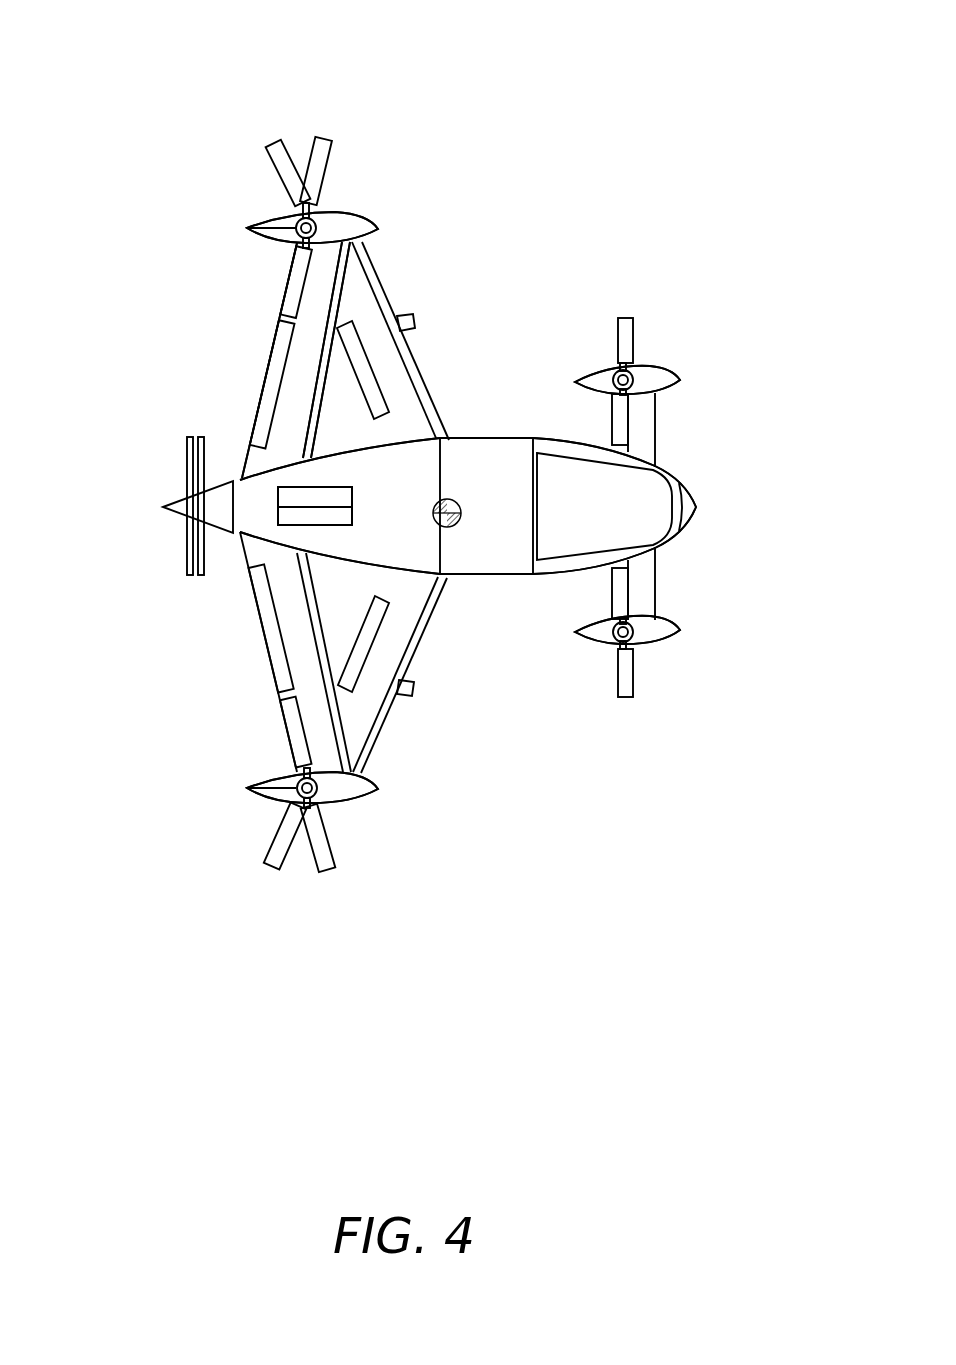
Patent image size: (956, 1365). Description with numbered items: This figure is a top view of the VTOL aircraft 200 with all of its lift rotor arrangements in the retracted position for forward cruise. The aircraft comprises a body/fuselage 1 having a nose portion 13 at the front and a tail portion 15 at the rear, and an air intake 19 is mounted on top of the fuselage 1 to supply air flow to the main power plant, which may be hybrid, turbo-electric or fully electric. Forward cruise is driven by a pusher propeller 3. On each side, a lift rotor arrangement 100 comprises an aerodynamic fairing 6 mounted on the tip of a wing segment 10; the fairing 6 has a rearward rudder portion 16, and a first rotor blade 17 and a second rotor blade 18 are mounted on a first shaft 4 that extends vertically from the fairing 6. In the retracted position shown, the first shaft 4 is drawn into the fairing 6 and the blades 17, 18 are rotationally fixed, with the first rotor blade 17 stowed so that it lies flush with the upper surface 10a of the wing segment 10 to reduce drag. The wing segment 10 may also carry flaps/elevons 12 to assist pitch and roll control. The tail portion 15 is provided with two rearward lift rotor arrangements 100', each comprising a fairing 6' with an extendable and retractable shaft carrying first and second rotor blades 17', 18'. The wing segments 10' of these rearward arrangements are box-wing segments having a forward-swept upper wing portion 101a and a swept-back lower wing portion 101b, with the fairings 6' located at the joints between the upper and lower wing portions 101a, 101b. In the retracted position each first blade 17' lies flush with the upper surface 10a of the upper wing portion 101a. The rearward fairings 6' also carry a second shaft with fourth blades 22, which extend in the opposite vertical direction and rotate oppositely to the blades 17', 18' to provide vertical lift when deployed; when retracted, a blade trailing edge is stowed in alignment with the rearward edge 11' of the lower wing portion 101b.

The body/fuselage 1 is at (485, 450).
The pusher propeller 3 is at (184, 451).
The first shaft 4 is at (617, 372).
The aerodynamic fairing 6 is at (656, 465).
The fairing 6' is at (358, 490).
The wing segment 10 is at (699, 506).
The wing segment 10' is at (391, 360).
The upper surface 10a is at (310, 343).
The rearward edge 11' is at (261, 382).
The flaps/elevons 12 is at (265, 373).
The nose portion 13 is at (658, 472).
The tail portion 15 is at (337, 558).
The rearward rudder portion 16 is at (287, 224).
The first rotor blade 17 is at (582, 506).
The first rotor blade 17' is at (251, 511).
The second rotor blade 18 is at (592, 512).
The second rotor blade 18' is at (359, 502).
The air intake 19 is at (292, 527).
The fourth blades 22 is at (283, 162).
The lift rotor arrangement 100 is at (635, 524).
The rearward lift rotor arrangement 100' is at (312, 497).
The upper wing portion 101a is at (300, 650).
The lower wing portion 101b is at (377, 266).
The VTOL aircraft 200 is at (644, 151).